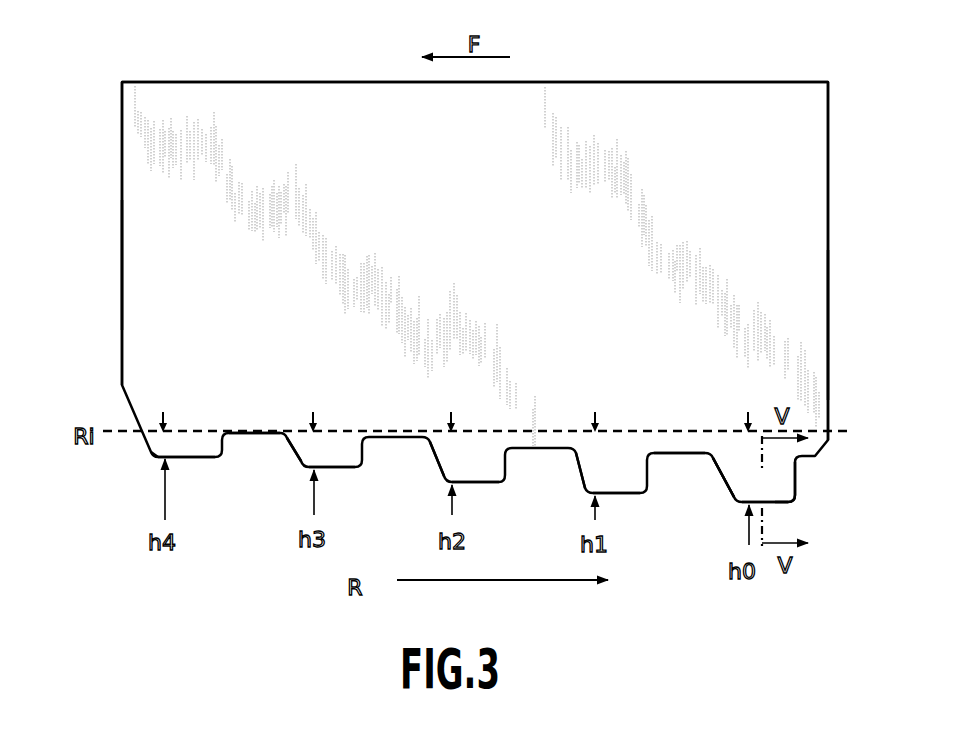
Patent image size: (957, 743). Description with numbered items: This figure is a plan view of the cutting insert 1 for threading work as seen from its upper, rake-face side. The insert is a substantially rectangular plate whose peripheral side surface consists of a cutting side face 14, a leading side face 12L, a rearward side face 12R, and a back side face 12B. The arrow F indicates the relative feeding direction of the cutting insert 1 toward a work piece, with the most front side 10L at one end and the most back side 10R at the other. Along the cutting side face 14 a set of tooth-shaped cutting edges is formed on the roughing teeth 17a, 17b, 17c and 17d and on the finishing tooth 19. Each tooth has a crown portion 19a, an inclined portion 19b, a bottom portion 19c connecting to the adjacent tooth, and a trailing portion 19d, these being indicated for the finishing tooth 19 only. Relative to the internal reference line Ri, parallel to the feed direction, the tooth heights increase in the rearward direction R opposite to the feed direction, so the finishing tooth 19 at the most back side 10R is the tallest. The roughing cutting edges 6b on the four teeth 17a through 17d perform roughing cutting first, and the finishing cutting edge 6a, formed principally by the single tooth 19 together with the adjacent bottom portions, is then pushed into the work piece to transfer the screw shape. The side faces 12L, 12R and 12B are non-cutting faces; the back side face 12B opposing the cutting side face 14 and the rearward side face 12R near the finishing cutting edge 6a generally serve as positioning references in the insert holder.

The cutting insert 1 is at (181, 70).
The finishing cutting edge 6a is at (740, 470).
The roughing cutting edges 6b is at (183, 440).
The most front side 10L is at (124, 193).
The most back side 10R is at (828, 242).
The back side face 12B is at (607, 80).
The leading side face 12L is at (118, 267).
The rearward side face 12R is at (826, 295).
The cutting side face 14 is at (252, 527).
The roughing tooth 17a is at (630, 487).
The roughing tooth 17b is at (492, 473).
The roughing tooth 17c is at (344, 463).
The roughing tooth 17d is at (186, 448).
The finishing tooth 19 is at (743, 487).
The crown portion 19a is at (784, 505).
The inclined portion 19b is at (722, 473).
The bottom portion 19c is at (677, 454).
The trailing portion 19d is at (796, 485).